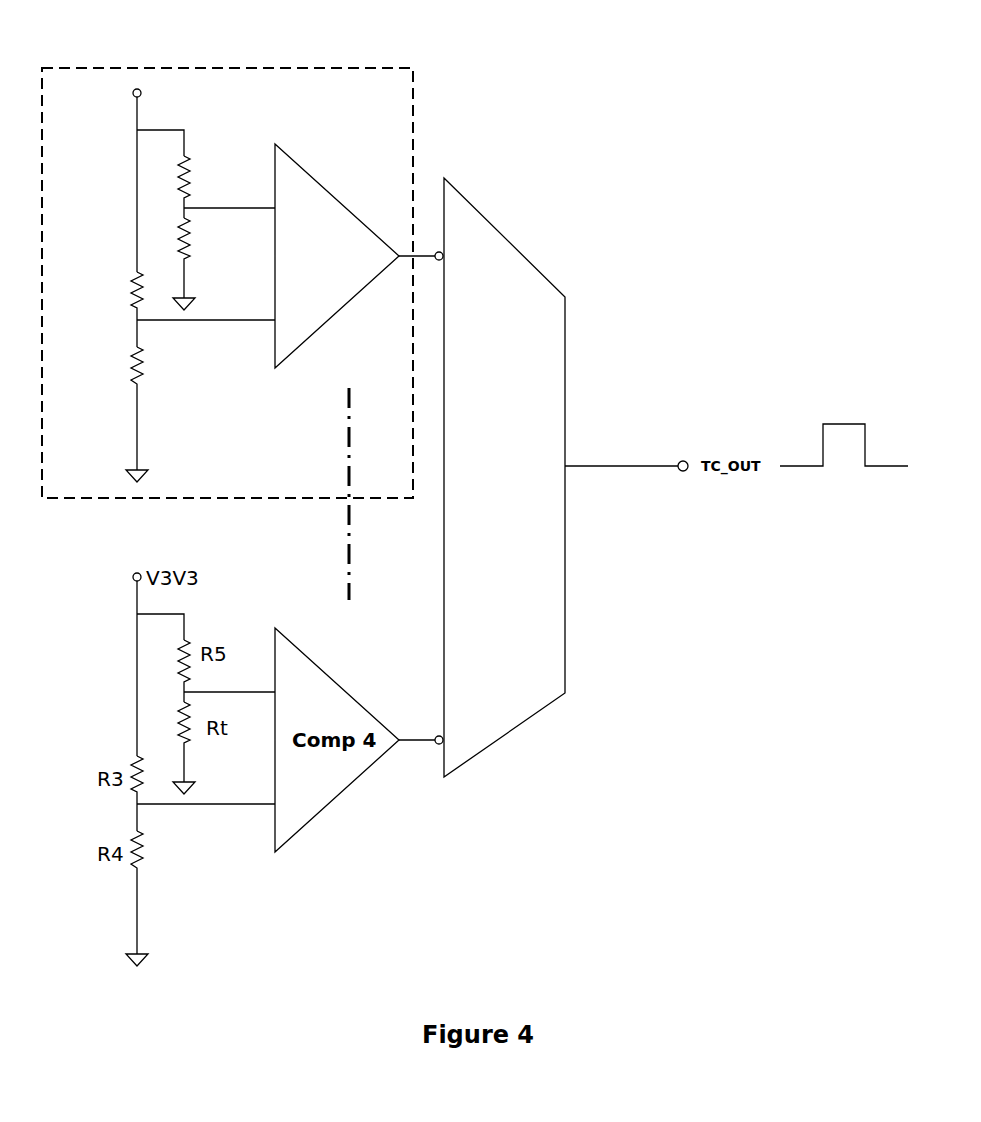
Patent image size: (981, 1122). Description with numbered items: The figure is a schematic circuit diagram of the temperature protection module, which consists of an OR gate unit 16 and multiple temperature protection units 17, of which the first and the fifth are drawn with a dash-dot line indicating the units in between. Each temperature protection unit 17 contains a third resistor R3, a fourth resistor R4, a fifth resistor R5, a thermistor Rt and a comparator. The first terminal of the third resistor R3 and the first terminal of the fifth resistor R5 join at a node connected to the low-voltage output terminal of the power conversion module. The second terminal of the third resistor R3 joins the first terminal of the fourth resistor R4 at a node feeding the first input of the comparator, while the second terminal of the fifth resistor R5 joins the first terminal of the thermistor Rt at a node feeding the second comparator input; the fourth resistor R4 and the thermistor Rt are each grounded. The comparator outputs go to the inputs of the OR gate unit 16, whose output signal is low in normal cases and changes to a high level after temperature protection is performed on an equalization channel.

The OR gate unit 16 is at (499, 262).
The temperature protection unit 17 is at (285, 68).
The third resistor R3 is at (120, 309).
The fourth resistor R4 is at (120, 408).
The fifth resistor R5 is at (202, 187).
The thermistor Rt is at (203, 258).